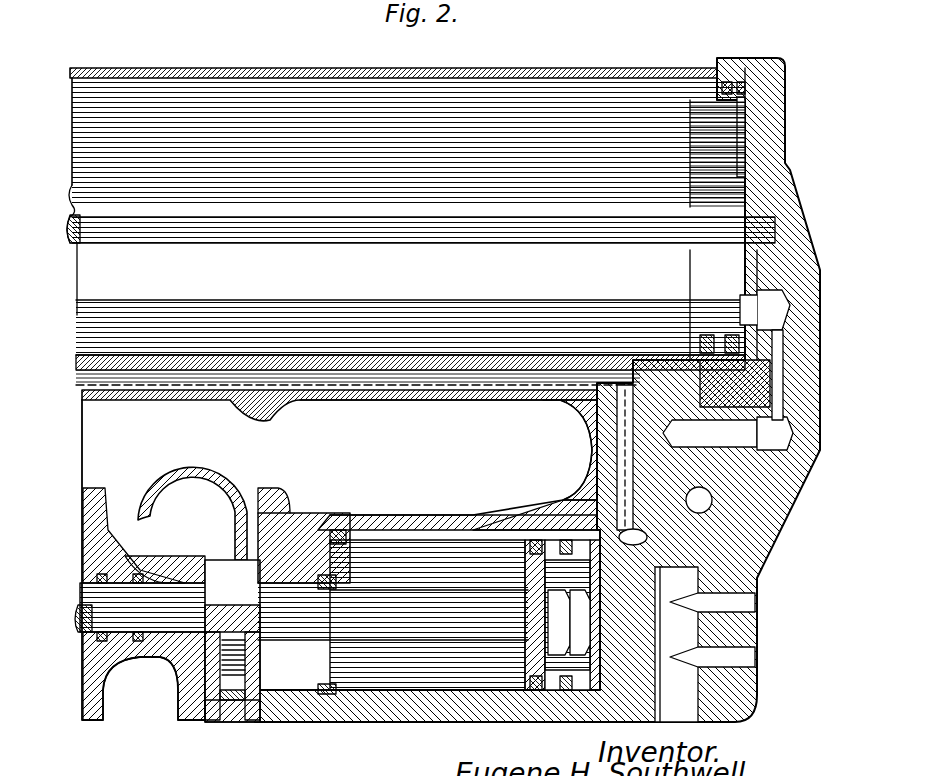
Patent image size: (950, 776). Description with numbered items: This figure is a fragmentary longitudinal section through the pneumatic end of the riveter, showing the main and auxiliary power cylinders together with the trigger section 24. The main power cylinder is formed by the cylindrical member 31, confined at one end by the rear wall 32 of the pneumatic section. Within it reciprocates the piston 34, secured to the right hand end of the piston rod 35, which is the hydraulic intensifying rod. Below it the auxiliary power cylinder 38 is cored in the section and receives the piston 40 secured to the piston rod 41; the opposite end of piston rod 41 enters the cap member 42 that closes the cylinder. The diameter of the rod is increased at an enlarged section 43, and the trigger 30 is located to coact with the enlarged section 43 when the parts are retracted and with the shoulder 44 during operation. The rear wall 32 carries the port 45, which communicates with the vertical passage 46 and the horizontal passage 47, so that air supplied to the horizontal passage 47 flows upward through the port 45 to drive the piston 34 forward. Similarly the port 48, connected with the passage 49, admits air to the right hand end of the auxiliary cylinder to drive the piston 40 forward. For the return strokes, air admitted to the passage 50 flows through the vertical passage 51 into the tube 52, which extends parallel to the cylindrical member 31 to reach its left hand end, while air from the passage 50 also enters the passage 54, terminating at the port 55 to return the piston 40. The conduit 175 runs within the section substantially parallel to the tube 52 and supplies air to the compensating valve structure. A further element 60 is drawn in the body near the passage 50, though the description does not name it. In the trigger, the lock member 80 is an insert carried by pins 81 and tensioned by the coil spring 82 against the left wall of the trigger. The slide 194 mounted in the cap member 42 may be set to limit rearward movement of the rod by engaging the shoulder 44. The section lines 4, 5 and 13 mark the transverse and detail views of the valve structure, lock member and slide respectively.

The section line 4- 4 is at (665, 55).
The section line 5- 5 is at (222, 56).
The section line 13- 13 is at (275, 458).
The trigger section 24 is at (96, 495).
The trigger 30 is at (192, 460).
The cylindrical member 31 is at (540, 68).
The rear wall 32 is at (797, 200).
The piston 34 is at (700, 156).
The piston rod 35 is at (400, 197).
The auxiliary power cylinder 38 is at (440, 698).
The piston 40 is at (440, 565).
The piston rod 41 is at (438, 615).
The cap member 42 is at (300, 515).
The enlarged section 43 is at (150, 586).
The shoulder 44 is at (318, 598).
The port 45 is at (757, 300).
The vertical passage 46 is at (705, 322).
The horizontal passage 47 is at (640, 488).
The port 48 is at (592, 698).
The passage 49 is at (640, 642).
The passage 50 is at (647, 540).
The vertical passage 51 is at (588, 442).
The tube 52 is at (344, 368).
The passage 54 is at (457, 518).
The port 55 is at (380, 518).
The port 60 is at (712, 505).
The lock member 80 is at (225, 690).
The pins 81 is at (222, 698).
The coil spring 82 is at (224, 660).
The conduit 175 is at (268, 370).
The slide 194 is at (295, 705).